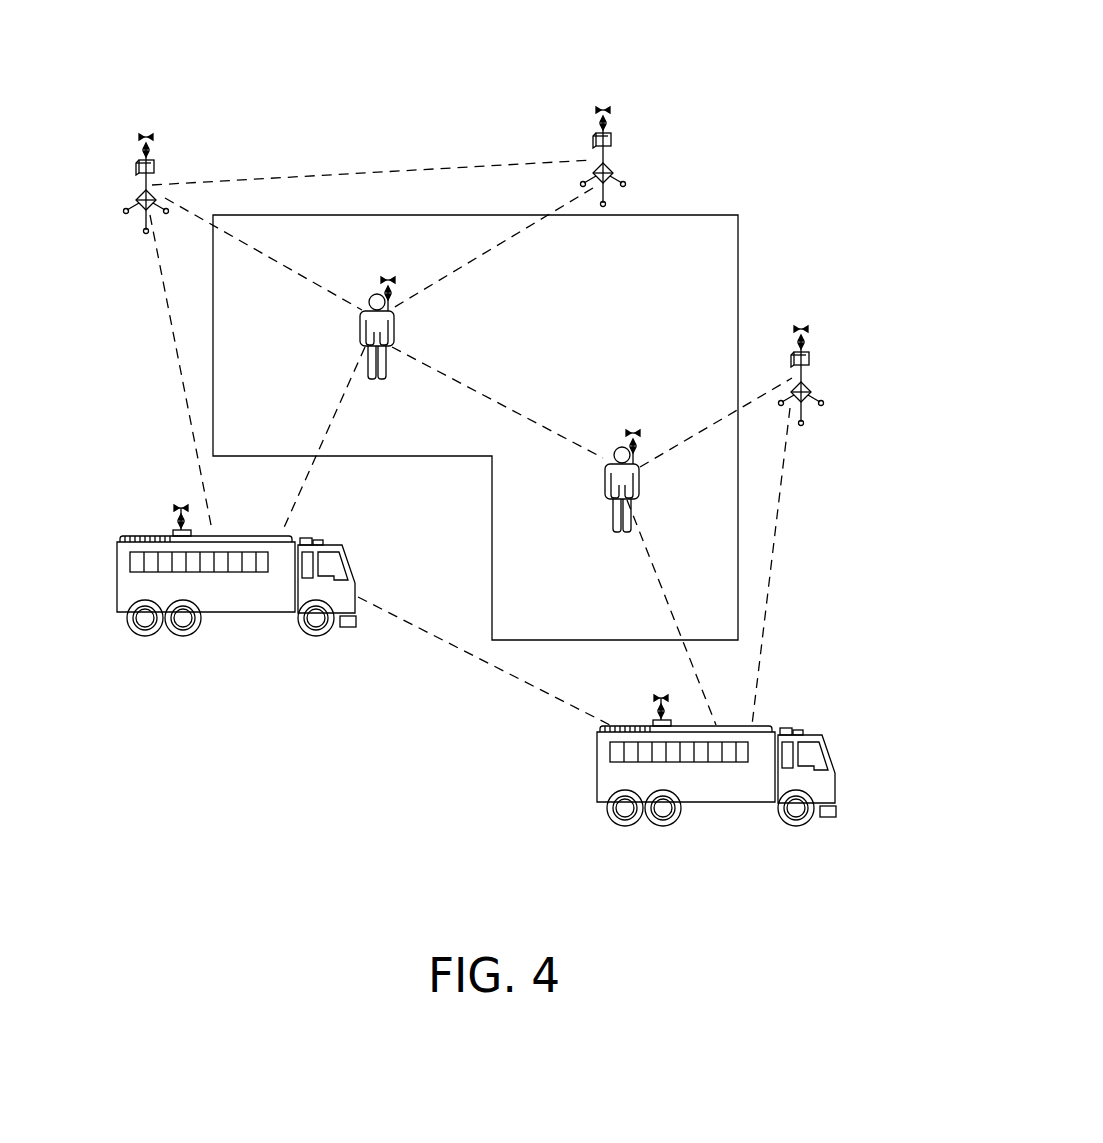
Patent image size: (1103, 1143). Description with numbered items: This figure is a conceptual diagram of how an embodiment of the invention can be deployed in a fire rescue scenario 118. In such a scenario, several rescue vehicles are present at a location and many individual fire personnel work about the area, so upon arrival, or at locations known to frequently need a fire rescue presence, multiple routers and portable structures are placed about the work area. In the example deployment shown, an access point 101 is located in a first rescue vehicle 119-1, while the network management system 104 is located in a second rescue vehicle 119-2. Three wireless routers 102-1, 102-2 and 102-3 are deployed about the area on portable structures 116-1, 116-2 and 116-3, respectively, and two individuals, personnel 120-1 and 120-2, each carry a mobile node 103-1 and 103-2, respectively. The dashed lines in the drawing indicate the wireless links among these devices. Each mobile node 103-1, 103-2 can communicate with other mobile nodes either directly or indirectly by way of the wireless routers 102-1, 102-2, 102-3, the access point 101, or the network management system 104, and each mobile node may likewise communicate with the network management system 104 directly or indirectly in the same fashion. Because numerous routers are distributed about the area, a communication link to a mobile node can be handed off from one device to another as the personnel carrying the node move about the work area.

The access point 101 is at (173, 508).
The wireless router 102-1 is at (138, 169).
The wireless router 102-2 is at (595, 140).
The wireless router 102-3 is at (809, 360).
The mobile node 103-1 is at (378, 295).
The mobile node 103-2 is at (615, 445).
The network management system 104 is at (651, 698).
The portable structure 116-1 is at (141, 212).
The portable structure 116-2 is at (612, 173).
The portable structure 116-3 is at (814, 392).
The fire rescue scenario 118 is at (820, 83).
The rescue vehicle 119-1 is at (240, 613).
The rescue vehicle 119-2 is at (720, 803).
The individual personnel 120-1 is at (380, 380).
The individual personnel 120-2 is at (620, 530).